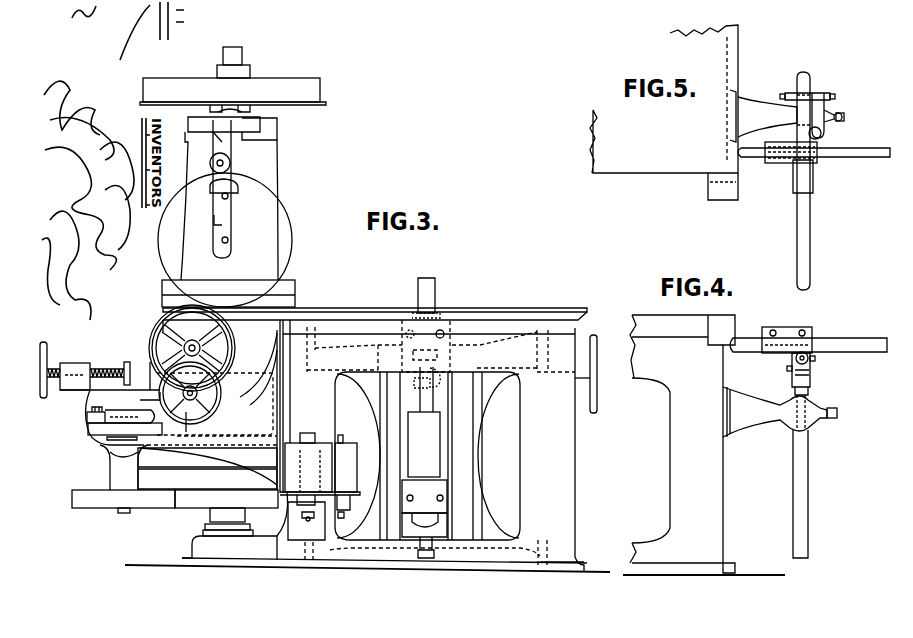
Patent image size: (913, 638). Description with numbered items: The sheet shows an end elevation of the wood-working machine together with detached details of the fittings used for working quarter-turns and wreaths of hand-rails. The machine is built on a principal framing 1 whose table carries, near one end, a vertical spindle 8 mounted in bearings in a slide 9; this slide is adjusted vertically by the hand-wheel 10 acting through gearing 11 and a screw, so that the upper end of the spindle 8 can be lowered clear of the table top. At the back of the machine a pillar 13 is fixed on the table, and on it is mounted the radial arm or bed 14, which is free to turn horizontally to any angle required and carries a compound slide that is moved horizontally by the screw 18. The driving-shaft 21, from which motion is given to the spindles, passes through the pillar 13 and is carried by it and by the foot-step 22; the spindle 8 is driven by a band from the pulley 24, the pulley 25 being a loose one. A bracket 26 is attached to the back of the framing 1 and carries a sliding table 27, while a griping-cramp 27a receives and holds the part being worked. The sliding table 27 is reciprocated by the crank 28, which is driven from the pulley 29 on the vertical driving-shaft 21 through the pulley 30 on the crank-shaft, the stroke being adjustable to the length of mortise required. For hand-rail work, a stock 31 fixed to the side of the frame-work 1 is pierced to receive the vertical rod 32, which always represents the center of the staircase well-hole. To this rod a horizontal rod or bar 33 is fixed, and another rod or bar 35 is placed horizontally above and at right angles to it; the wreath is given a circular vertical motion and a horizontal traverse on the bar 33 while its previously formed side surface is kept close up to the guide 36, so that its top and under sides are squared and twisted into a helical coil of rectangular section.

In FIG. 3, the principal framing 1 is at (375, 440).
In FIG. 5, the principal framing 1 is at (664, 112).
In FIG. 4, the principal framing 1 is at (682, 444).
In FIG. 3, the vertical spindle 8 is at (426, 298).
In FIG. 3, the slide 9 is at (424, 462).
In FIG. 3, the hand-wheel 10 is at (589, 380).
In FIG. 3, the gearing 11 is at (422, 378).
In FIG. 3, the pillar 13 is at (226, 241).
In FIG. 3, the radial arm or bed 14 is at (224, 189).
In FIG. 3, the screw 18 is at (230, 164).
In FIG. 3, the driving-shaft 21 is at (233, 73).
In FIG. 3, the foot-step 22 is at (235, 526).
In FIG. 3, the pulley 24 is at (188, 467).
In FIG. 3, the loose pulley 25 is at (207, 479).
In FIG. 3, the bracket 26 is at (215, 397).
In FIG. 3, the sliding table 27 is at (104, 406).
In FIG. 3, the griping-cramp 27a is at (85, 370).
In FIG. 3, the crank 28 is at (124, 423).
In FIG. 3, the pulley 29 is at (226, 506).
In FIG. 3, the pulley 30 is at (123, 501).
In FIG. 5, the stock 31 is at (763, 116).
In FIG. 4, the stock 31 is at (780, 412).
In FIG. 4, the vertical rod 32 is at (800, 476).
In FIG. 5, the horizontal rod or bar 33 is at (803, 181).
In FIG. 4, the horizontal rod or bar 33 is at (806, 366).
In FIG. 5, the rod or bar 35 is at (814, 152).
In FIG. 4, the rod or bar 35 is at (808, 340).
In FIG. 5, the guide 36 is at (822, 135).